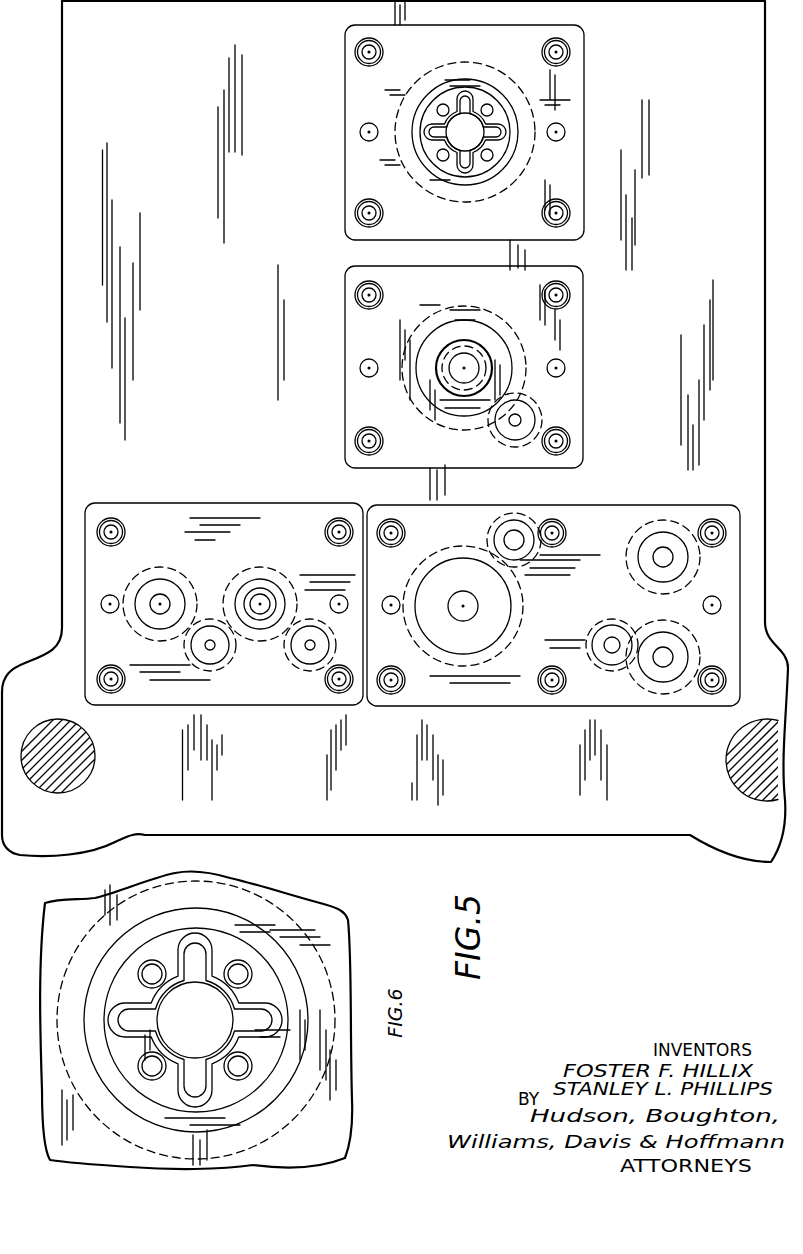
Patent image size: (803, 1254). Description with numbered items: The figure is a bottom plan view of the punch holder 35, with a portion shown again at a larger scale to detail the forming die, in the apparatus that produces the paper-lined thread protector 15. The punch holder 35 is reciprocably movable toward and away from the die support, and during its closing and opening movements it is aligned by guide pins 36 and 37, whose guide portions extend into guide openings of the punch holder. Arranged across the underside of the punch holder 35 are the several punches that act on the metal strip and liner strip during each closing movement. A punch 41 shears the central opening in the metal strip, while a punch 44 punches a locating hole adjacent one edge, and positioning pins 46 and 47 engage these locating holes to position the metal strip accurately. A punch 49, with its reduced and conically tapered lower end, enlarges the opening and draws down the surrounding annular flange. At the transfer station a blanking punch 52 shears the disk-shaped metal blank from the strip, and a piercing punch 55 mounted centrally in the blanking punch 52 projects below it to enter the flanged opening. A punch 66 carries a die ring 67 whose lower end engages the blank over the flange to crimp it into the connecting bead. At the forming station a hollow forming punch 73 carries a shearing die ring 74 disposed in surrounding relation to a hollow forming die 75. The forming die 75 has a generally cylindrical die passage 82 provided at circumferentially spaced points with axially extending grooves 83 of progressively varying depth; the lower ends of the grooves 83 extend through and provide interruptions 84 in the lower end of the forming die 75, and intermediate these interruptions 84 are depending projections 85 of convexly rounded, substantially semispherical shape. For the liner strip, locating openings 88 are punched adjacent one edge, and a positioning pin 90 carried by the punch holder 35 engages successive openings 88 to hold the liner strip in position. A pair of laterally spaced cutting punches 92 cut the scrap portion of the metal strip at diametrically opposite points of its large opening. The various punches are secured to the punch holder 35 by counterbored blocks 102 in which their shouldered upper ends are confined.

In FIG. 5, the thread protector 15 is at (478, 147).
In FIG. 6, the thread protector 15 is at (165, 1051).
In FIG. 5, the punch holder 35 is at (62, 302).
In FIG. 5, the guide pin 36 is at (95, 752).
In FIG. 5, the guide pin 37 is at (718, 772).
In FIG. 5, the punch 41 is at (163, 598).
In FIG. 5, the punch 44 is at (215, 645).
In FIG. 5, the positioning pin 46 is at (315, 645).
In FIG. 5, the positioning pin 47 is at (613, 642).
In FIG. 5, the punch 49 is at (256, 585).
In FIG. 5, the blanking punch 52 is at (503, 622).
In FIG. 5, the piercing punch 55 is at (469, 606).
In FIG. 5, the punch 66 is at (446, 330).
In FIG. 5, the die ring 67 is at (487, 350).
In FIG. 5, the forming punch 73 is at (458, 80).
In FIG. 6, the forming punch 73 is at (237, 905).
In FIG. 5, the shearing die ring 74 is at (478, 88).
In FIG. 6, the shearing die ring 74 is at (262, 945).
In FIG. 5, the hollow forming die 75 is at (500, 113).
In FIG. 6, the hollow forming die 75 is at (268, 985).
In FIG. 5, the die passage 82 is at (438, 152).
In FIG. 6, the die passage 82 is at (138, 1058).
In FIG. 5, the grooves 83 is at (426, 137).
In FIG. 6, the grooves 83 is at (110, 1022).
In FIG. 5, the interruptions 84 is at (432, 128).
In FIG. 6, the interruptions 84 is at (130, 1008).
In FIG. 5, the depending projections 85 is at (441, 105).
In FIG. 6, the depending projections 85 is at (164, 960).
In FIG. 5, the locating openings 88 is at (513, 539).
In FIG. 5, the positioning pin 90 is at (515, 418).
In FIG. 5, the cutting punches 92 is at (663, 652).
In FIG. 5, the counterbored blocks 102 is at (346, 196).
In FIG. 6, the counterbored blocks 102 is at (44, 1096).